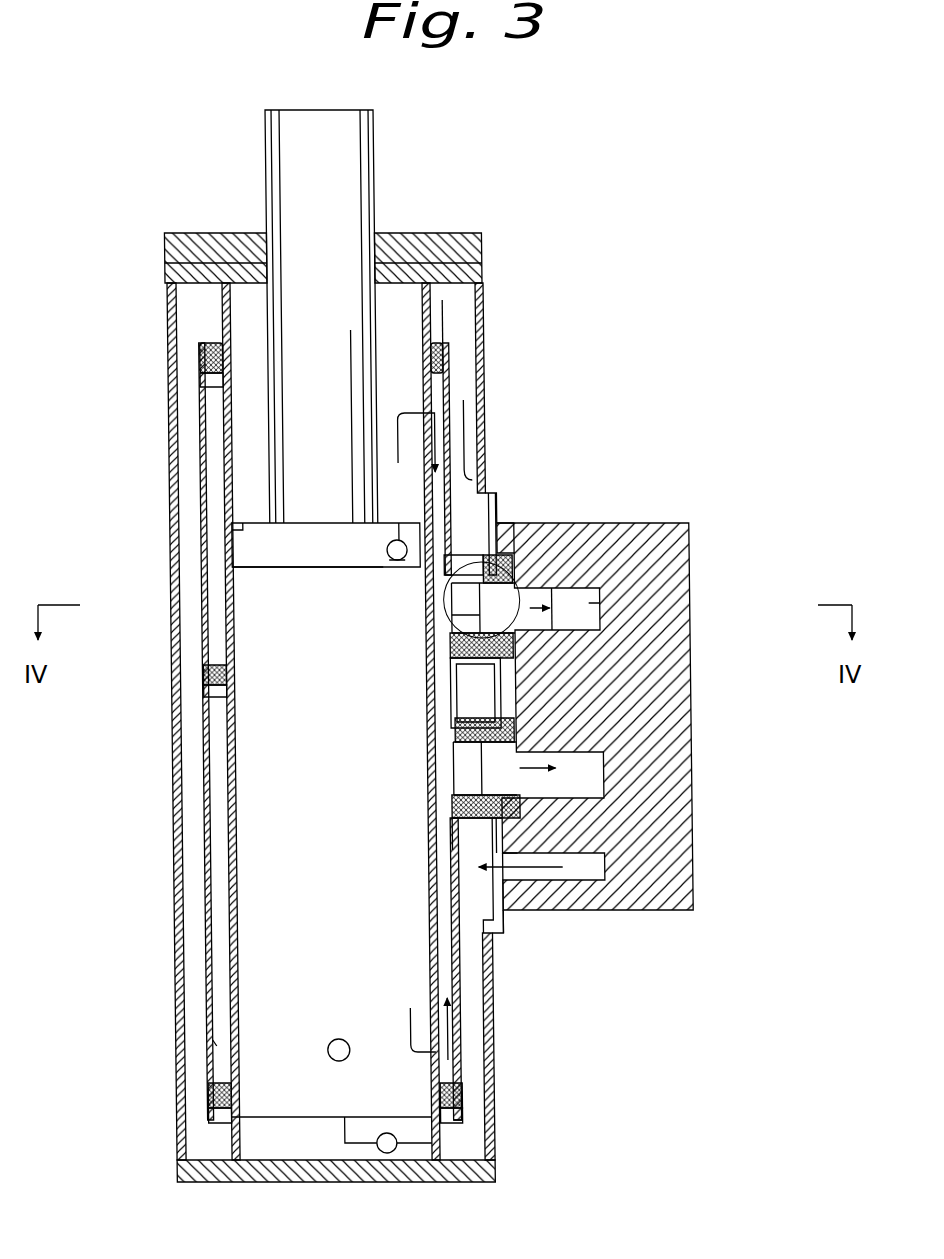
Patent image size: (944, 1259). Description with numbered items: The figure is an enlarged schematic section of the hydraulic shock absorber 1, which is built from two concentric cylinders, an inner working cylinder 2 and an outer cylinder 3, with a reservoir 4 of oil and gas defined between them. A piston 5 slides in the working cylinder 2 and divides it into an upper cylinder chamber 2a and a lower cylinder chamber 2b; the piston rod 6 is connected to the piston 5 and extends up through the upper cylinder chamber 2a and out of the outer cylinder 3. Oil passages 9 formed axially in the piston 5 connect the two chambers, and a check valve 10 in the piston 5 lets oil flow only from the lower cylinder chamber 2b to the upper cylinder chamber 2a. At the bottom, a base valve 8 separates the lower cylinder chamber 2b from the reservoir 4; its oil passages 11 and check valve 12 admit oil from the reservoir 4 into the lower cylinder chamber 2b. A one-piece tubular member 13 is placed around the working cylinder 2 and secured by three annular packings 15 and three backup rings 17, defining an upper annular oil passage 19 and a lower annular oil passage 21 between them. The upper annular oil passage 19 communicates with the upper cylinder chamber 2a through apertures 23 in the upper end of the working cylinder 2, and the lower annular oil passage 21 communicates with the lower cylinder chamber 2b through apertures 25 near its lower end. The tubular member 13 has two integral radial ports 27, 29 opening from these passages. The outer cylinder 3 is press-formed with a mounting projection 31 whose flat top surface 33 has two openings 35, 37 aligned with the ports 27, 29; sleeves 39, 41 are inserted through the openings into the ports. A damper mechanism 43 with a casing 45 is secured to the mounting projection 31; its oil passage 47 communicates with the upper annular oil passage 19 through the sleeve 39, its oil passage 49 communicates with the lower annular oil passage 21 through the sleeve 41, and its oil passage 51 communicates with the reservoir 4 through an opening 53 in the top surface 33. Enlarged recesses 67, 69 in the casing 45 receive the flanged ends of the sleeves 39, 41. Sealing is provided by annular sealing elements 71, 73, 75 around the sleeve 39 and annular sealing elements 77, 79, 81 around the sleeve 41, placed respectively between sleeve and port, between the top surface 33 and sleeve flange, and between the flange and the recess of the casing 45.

The hydraulic shock absorber 1 is at (608, 408).
The inner working cylinder 2 is at (215, 298).
The upper cylinder chamber 2a is at (253, 300).
The lower cylinder chamber 2b is at (290, 856).
The outer cylinder 3 is at (170, 320).
The reservoir 4 is at (185, 432).
The piston 5 is at (248, 538).
The piston rod 6 is at (314, 120).
The base valve 8 is at (272, 1162).
The oil passages 9 is at (275, 620).
The check valve 10 is at (392, 570).
The oil passages 11 is at (340, 1145).
The check valve 12 is at (378, 1150).
The tubular member 13 is at (203, 805).
The annular packings 15 is at (205, 383).
The backup rings 17 is at (203, 362).
The upper annular oil passage 19 is at (440, 345).
The lower annular oil passage 21 is at (465, 1000).
The apertures 23 is at (450, 395).
The apertures 25 is at (206, 1050).
The radial port 27 is at (462, 440).
The radial port 29 is at (470, 700).
The mounting projection 31 is at (490, 495).
The flat top surface 33 is at (497, 520).
The opening 35 is at (508, 568).
The opening 37 is at (440, 752).
The sleeve 39 is at (500, 655).
The sleeve 41 is at (490, 808).
The damper mechanism 43 is at (706, 914).
The casing 45 is at (590, 705).
The oil passage 47 is at (592, 603).
The oil passage 49 is at (588, 785).
The oil passage 51 is at (625, 912).
The opening 53 is at (508, 878).
The enlarged recess 67 is at (520, 640).
The enlarged recess 69 is at (490, 735).
The annular sealing element 71 is at (500, 548).
The annular sealing element 73 is at (540, 548).
The annular sealing element 75 is at (598, 540).
The annular sealing element 77 is at (490, 955).
The annular sealing element 79 is at (598, 878).
The annular sealing element 81 is at (588, 862).